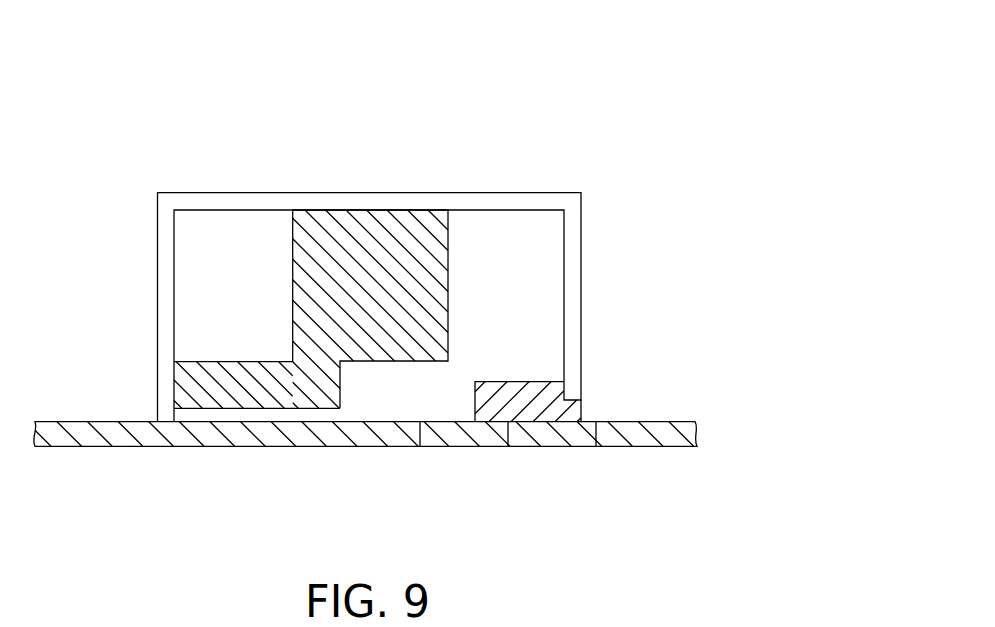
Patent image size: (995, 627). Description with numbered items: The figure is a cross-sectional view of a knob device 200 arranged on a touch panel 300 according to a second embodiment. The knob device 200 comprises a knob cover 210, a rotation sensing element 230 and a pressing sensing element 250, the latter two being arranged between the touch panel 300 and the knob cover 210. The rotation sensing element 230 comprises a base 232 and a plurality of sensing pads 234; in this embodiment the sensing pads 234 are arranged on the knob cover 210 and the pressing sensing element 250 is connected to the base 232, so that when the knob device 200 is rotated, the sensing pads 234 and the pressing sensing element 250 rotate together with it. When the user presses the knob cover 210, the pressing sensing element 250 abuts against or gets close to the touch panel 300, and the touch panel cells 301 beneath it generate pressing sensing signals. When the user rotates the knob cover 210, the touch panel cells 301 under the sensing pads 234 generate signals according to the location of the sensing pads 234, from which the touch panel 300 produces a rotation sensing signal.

The knob device 200 is at (547, 93).
The knob cover 210 is at (577, 210).
The rotation sensing element 230 is at (525, 316).
The base 232 is at (448, 297).
The sensing pads 234 is at (575, 378).
The pressing sensing element 250 is at (195, 373).
The touch panel 300 is at (672, 435).
The touch panel cell 301 is at (462, 435).